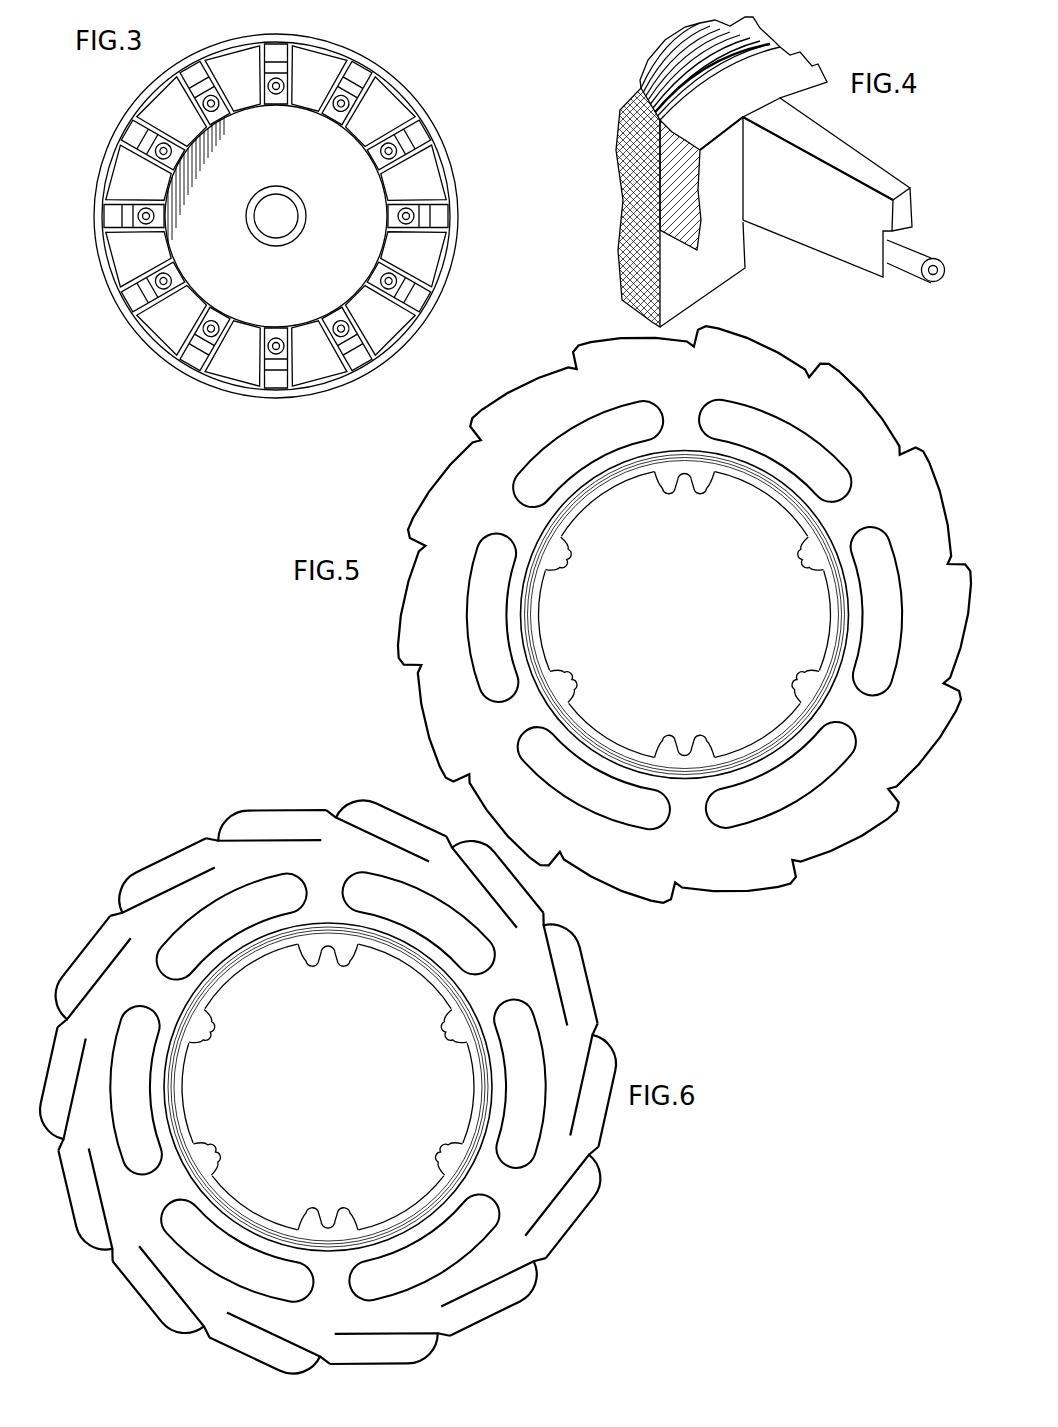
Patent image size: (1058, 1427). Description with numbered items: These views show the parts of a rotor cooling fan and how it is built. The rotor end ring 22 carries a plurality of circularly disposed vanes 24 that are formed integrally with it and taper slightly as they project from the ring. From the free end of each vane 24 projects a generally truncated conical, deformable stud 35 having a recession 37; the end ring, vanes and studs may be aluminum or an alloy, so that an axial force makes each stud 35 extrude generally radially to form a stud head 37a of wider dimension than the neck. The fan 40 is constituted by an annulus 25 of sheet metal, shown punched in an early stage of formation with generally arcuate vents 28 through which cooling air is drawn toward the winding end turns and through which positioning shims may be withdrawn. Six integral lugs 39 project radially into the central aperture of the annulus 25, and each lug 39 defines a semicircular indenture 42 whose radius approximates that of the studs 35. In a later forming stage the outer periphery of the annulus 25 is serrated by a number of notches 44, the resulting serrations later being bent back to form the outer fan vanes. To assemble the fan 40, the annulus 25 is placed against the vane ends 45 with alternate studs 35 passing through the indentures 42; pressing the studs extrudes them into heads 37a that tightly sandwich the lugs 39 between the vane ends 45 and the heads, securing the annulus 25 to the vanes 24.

In FIG. 3, the rotor end ring 22 is at (392, 107).
In FIG. 4, the rotor end ring 22 is at (665, 190).
In FIG. 3, the vane 24 is at (144, 204).
In FIG. 4, the vane 24 is at (803, 235).
In FIG. 5, the annulus 25 is at (878, 428).
In FIG. 6, the annulus 25 is at (340, 1077).
In FIG. 5, the vent 28 is at (800, 795).
In FIG. 6, the vent 28 is at (548, 1060).
In FIG. 3, the stud 35 is at (153, 270).
In FIG. 3, the recession 37 is at (207, 340).
In FIG. 4, the recession 37 is at (945, 271).
In FIG. 4, the stud head 37a is at (917, 251).
In FIG. 5, the lug 39 is at (563, 565).
In FIG. 6, the lug 39 is at (346, 957).
In FIG. 5, the fan 40 is at (408, 466).
In FIG. 6, the fan 40 is at (597, 1222).
In FIG. 5, the semicircular indenture 42 is at (690, 488).
In FIG. 6, the semicircular indenture 42 is at (330, 960).
In FIG. 6, the notch 44 is at (380, 837).
In FIG. 4, the vane end 45 is at (905, 205).